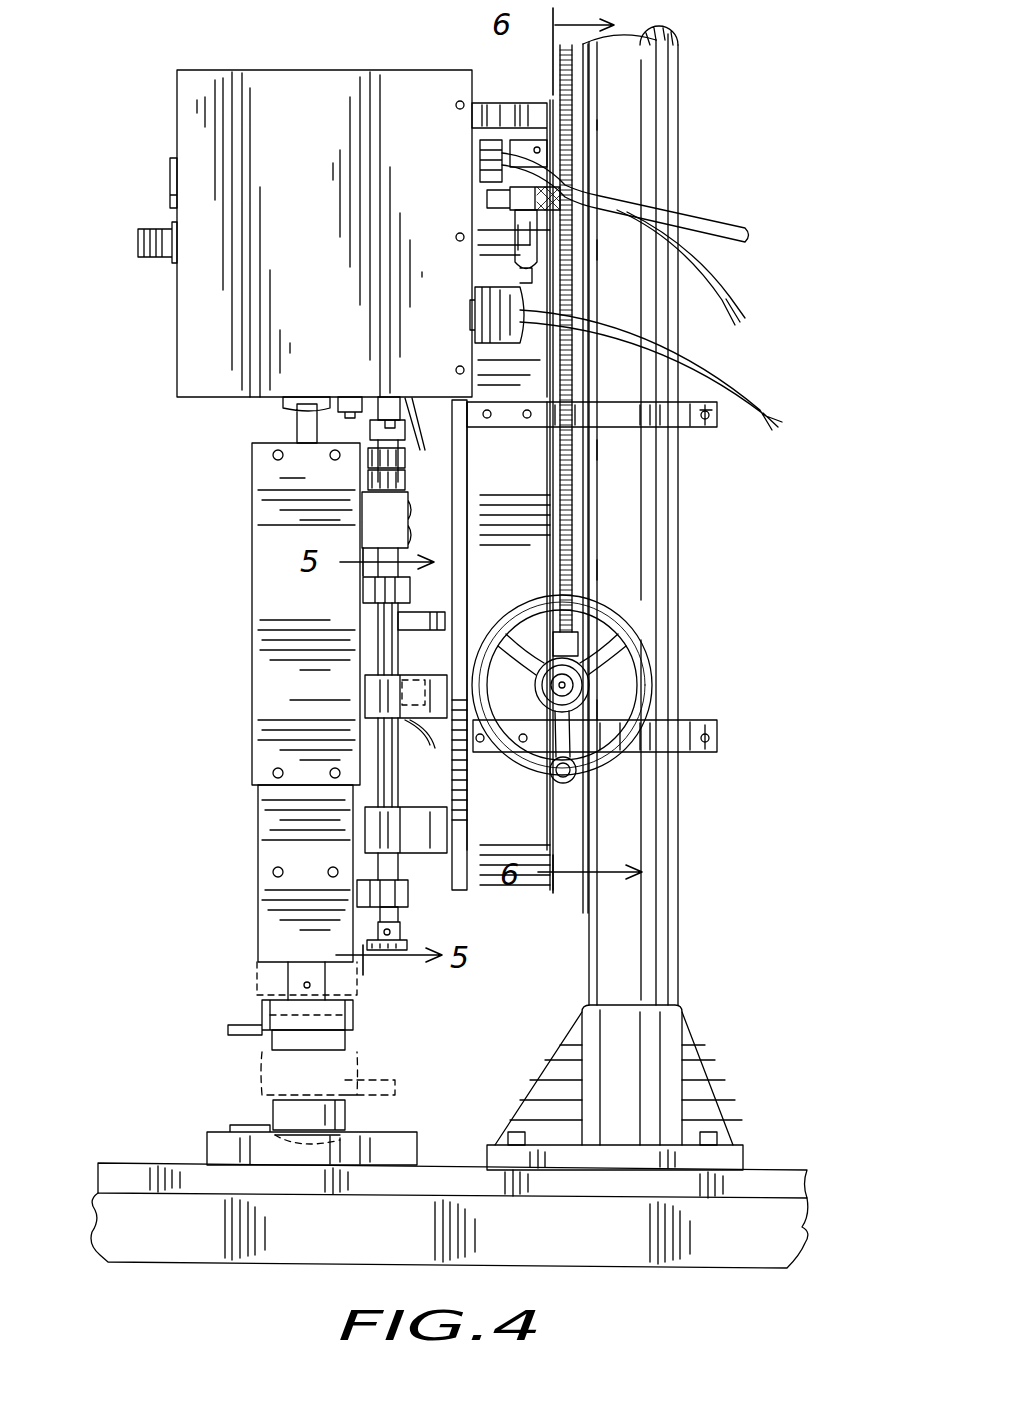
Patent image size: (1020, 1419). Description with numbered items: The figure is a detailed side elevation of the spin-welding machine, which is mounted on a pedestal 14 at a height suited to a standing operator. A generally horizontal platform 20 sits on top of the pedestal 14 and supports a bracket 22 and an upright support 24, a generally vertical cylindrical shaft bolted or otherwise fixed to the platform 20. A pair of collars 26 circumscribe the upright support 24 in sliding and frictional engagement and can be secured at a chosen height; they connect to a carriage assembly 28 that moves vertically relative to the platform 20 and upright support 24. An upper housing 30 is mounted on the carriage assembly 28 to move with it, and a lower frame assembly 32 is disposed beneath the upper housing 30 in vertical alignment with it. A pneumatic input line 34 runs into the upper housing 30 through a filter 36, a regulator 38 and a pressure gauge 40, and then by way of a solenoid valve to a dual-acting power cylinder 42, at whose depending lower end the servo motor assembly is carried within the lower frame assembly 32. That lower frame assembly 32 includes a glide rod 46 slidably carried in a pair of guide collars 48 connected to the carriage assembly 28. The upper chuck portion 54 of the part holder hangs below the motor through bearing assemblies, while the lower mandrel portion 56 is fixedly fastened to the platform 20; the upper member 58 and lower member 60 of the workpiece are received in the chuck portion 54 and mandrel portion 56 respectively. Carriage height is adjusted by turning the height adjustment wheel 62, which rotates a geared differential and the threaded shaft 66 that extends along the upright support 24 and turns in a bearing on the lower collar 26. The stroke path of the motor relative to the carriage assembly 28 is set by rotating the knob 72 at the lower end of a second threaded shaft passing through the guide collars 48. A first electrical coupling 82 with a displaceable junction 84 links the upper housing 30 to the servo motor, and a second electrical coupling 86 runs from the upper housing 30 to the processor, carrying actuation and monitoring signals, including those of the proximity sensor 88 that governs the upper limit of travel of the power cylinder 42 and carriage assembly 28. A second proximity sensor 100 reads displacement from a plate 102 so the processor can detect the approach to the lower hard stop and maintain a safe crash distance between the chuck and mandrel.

The pedestal 14 is at (790, 1215).
The platform 20 is at (798, 1170).
The bracket 22 is at (705, 1085).
The upright support 24 is at (665, 120).
The collars 26 is at (690, 427).
The carriage assembly 28 is at (467, 887).
The upper housing 30 is at (190, 345).
The lower frame assembly 32 is at (252, 588).
The pneumatic input line 34 is at (722, 218).
The filter 36 is at (515, 237).
The regulator 38 is at (170, 172).
The pressure gauge 40 is at (138, 243).
The power cylinder 42 is at (297, 423).
The glide rod 46 is at (388, 763).
The guide collars 48 is at (380, 710).
The upper chuck portion 54 is at (353, 1013).
The lower mandrel portion 56 is at (418, 1140).
The upper member 58 is at (300, 1085).
The lower member 60 is at (273, 1112).
The height adjustment wheel 62 is at (650, 678).
The threaded shaft 66 is at (568, 560).
The knob 72 is at (395, 935).
The first electrical coupling 82 is at (378, 522).
The displaceable junction 84 is at (398, 418).
The second electrical coupling 86 is at (720, 305).
The proximity sensor 88 is at (762, 412).
The second proximity sensor 100 is at (425, 688).
The plate 102 is at (430, 625).